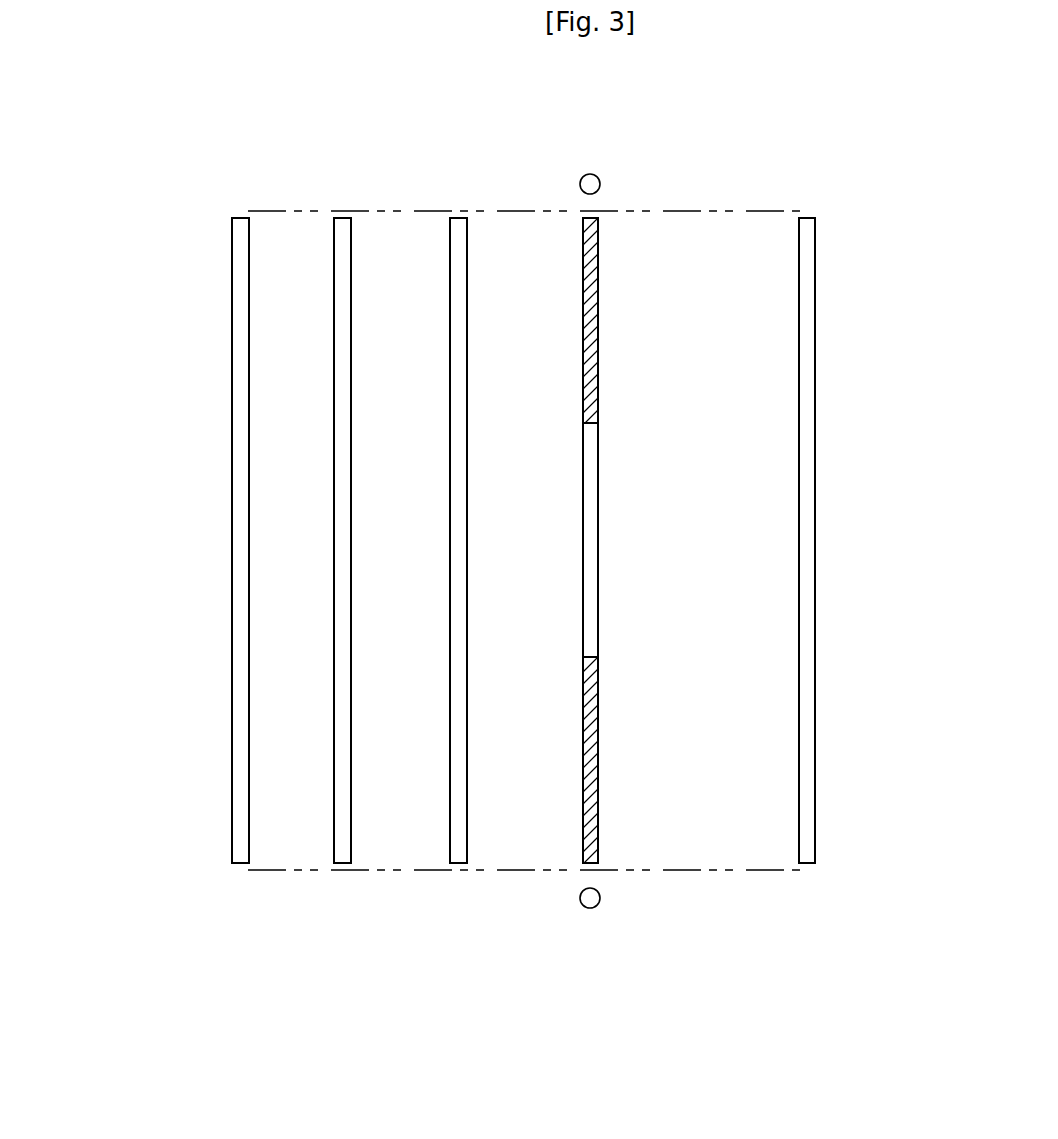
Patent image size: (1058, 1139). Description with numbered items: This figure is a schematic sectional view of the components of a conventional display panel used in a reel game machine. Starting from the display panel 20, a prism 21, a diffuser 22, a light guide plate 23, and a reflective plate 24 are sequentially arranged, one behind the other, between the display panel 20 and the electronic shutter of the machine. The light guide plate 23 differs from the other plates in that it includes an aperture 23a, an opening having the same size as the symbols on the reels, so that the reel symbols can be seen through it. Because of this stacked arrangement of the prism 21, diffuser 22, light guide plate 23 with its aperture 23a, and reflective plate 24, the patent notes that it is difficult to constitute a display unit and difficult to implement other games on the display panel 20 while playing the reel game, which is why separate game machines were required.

The display panel 20 is at (238, 578).
The prism 21 is at (343, 823).
The diffuser 22 is at (458, 842).
The light guide plate 23 is at (673, 470).
The aperture 23a is at (593, 575).
The reflective plate 24 is at (808, 824).